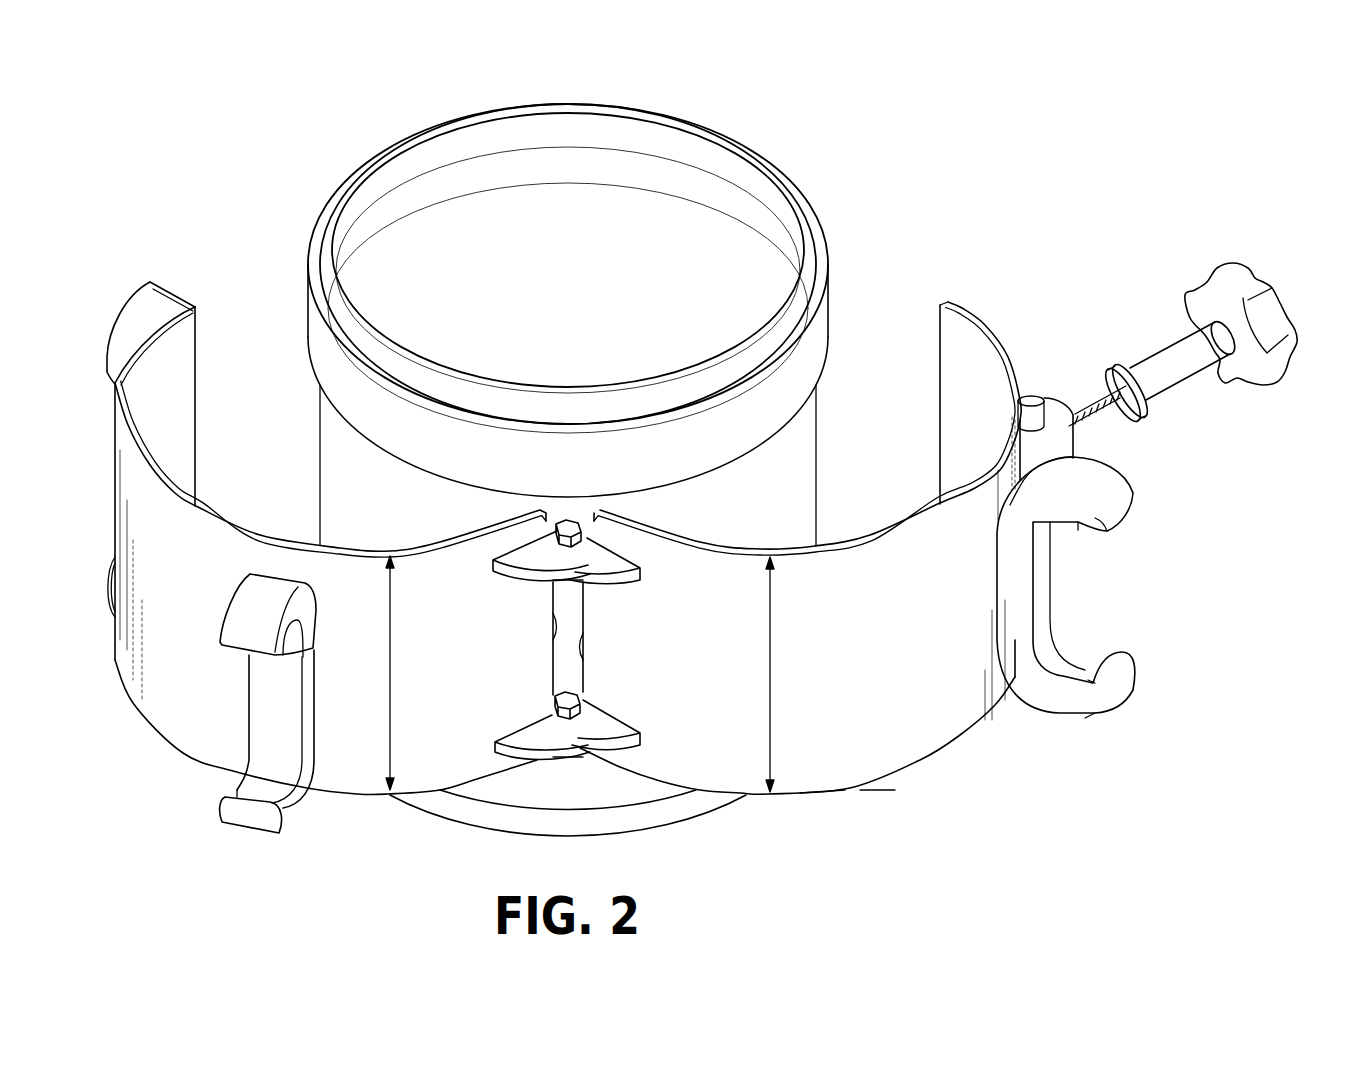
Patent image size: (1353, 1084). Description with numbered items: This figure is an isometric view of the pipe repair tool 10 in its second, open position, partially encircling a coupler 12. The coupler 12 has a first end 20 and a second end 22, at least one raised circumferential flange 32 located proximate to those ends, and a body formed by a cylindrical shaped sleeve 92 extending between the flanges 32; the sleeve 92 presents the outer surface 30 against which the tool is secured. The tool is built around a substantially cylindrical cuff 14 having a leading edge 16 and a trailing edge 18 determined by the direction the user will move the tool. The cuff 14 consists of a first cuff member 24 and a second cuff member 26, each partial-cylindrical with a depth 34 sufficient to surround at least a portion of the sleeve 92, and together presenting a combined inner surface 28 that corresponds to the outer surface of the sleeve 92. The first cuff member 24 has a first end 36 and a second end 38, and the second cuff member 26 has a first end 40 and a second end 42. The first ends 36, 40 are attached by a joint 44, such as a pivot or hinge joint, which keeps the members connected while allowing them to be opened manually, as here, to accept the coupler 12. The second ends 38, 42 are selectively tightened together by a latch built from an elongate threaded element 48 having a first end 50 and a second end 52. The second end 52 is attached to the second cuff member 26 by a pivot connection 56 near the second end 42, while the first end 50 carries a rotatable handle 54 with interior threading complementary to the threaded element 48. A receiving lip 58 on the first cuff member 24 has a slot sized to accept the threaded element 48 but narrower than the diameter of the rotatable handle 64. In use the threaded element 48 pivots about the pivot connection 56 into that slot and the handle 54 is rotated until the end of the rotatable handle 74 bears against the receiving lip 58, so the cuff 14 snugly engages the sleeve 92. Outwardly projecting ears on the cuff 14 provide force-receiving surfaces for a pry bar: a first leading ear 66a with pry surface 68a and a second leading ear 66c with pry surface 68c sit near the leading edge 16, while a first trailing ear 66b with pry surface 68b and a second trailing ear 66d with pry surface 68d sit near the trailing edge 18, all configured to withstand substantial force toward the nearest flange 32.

The pipe repair tool 10 is at (876, 797).
The coupler 12 is at (783, 152).
The cuff 14 is at (822, 780).
The leading edge 16 is at (955, 306).
The trailing edge 18 is at (955, 753).
The first end 20 is at (715, 138).
The second end 22 is at (642, 836).
The first cuff member 24 is at (326, 540).
The second cuff member 26 is at (938, 531).
The inner surface 28 is at (142, 541).
The outer surface 30 is at (804, 432).
The raised circumferential flange 32 is at (595, 850).
The depth 34 is at (390, 700).
The first end of the first cuff member 36 is at (551, 645).
The second end of the first cuff member 38 is at (198, 350).
The first end of the second cuff member 40 is at (585, 665).
The second end of the second cuff member 42 is at (937, 362).
The joint 44 is at (553, 763).
The elongate threaded element 48 is at (1092, 427).
The first end of the elongate threaded element 50 is at (1150, 406).
The second end of the elongate threaded element 52 is at (1068, 408).
The rotatable handle 54 is at (1253, 274).
The pivot connection 56 is at (1030, 402).
The receiving lip 58 is at (162, 281).
The rotatable handle diameter 64 is at (1107, 363).
The first leading ear 66a is at (237, 623).
The first trailing ear 66b is at (240, 826).
The second leading ear 66c is at (1113, 490).
The second trailing ear 66d is at (1085, 718).
The pry surface 68a is at (303, 641).
The pry surface 68b is at (260, 783).
The pry surface 68c is at (1080, 537).
The pry surface 68d is at (1090, 668).
The end of the rotatable handle 74 is at (1137, 376).
The sleeve 92 is at (318, 470).